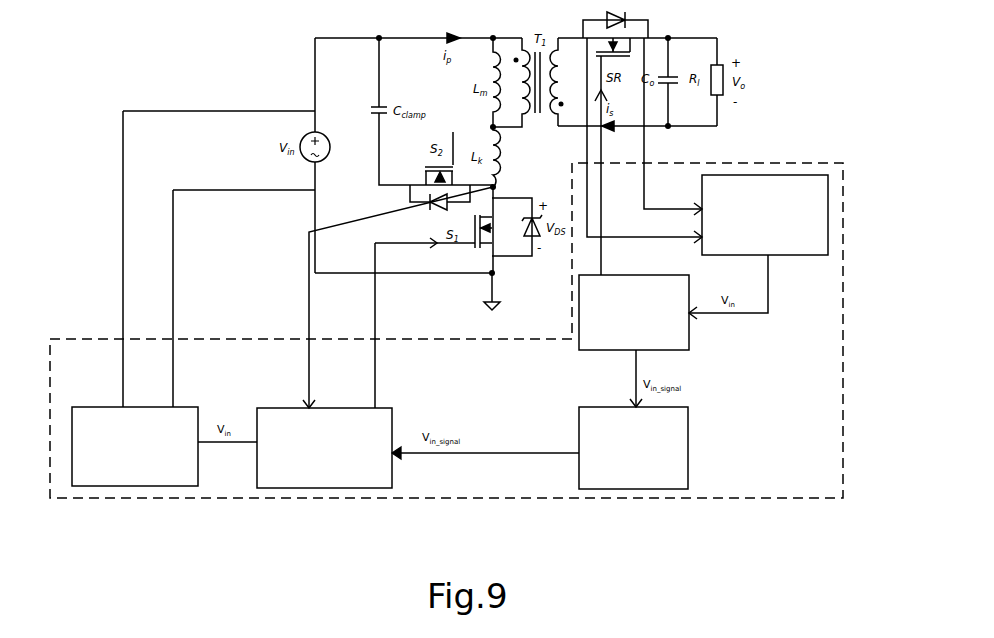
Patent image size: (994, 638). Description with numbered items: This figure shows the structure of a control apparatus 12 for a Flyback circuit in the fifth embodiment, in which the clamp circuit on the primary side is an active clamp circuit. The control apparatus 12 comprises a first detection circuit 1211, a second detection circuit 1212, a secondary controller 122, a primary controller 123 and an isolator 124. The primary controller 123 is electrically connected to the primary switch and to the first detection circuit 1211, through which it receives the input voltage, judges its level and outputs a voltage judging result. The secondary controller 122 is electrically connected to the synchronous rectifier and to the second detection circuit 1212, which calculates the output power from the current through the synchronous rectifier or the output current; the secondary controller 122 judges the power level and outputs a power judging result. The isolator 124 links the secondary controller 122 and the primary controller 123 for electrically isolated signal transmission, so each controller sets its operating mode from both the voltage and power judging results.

The control apparatus 12 is at (107, 334).
The first detection circuit 1211 is at (198, 486).
The second detection circuit 1212 is at (753, 176).
The secondary controller 122 is at (689, 348).
The primary controller 123 is at (392, 470).
The isolator 124 is at (688, 407).